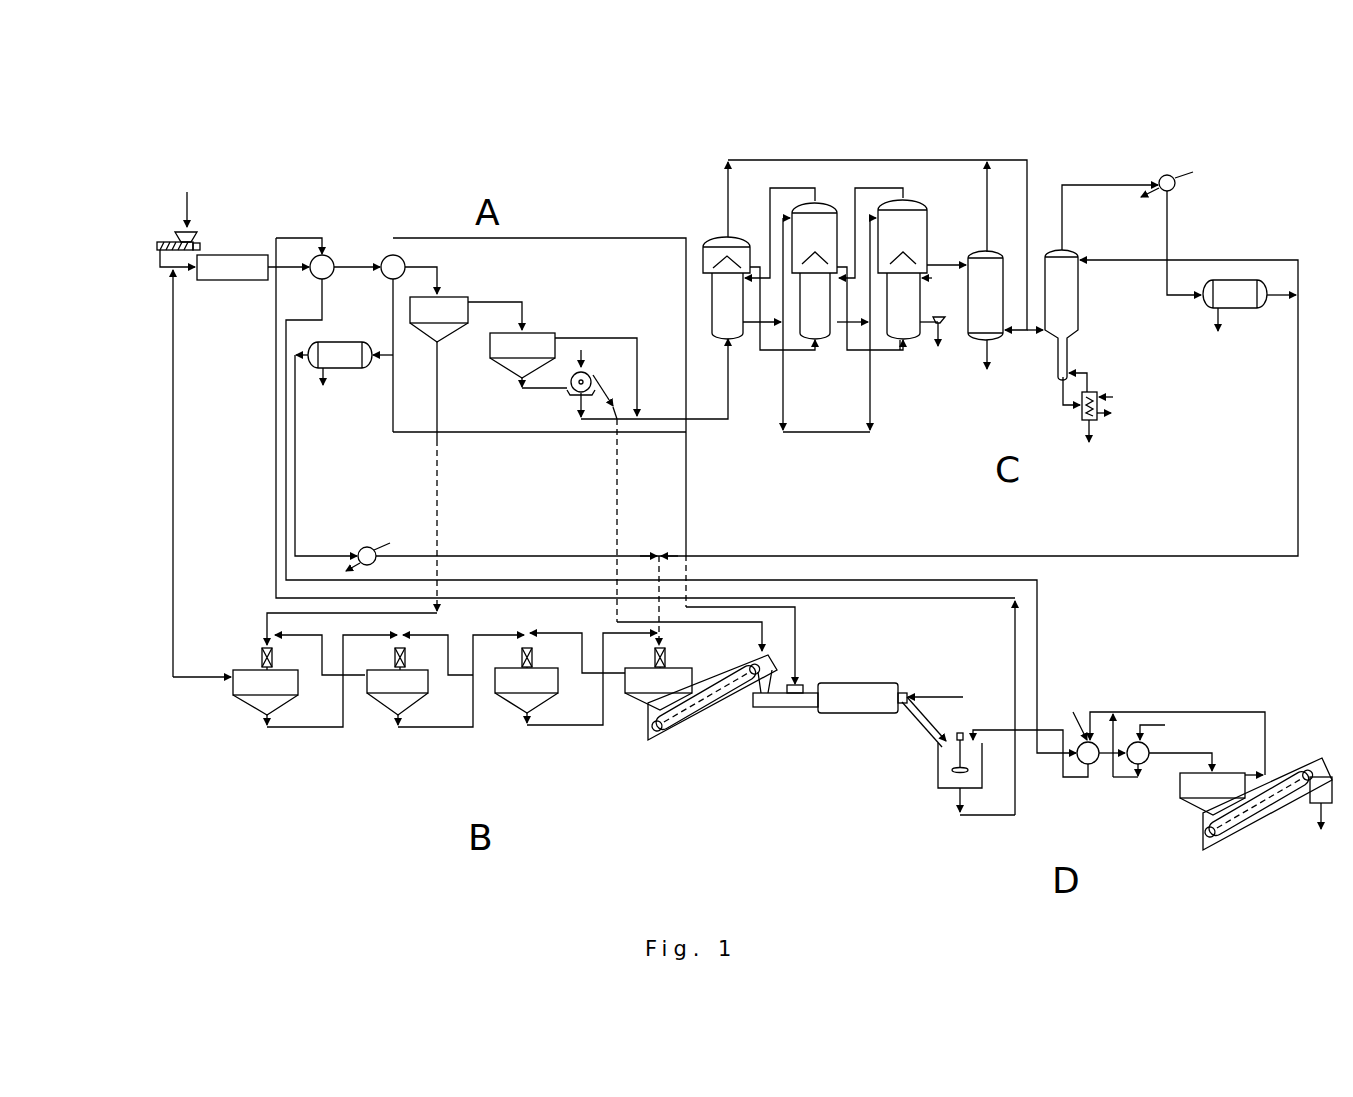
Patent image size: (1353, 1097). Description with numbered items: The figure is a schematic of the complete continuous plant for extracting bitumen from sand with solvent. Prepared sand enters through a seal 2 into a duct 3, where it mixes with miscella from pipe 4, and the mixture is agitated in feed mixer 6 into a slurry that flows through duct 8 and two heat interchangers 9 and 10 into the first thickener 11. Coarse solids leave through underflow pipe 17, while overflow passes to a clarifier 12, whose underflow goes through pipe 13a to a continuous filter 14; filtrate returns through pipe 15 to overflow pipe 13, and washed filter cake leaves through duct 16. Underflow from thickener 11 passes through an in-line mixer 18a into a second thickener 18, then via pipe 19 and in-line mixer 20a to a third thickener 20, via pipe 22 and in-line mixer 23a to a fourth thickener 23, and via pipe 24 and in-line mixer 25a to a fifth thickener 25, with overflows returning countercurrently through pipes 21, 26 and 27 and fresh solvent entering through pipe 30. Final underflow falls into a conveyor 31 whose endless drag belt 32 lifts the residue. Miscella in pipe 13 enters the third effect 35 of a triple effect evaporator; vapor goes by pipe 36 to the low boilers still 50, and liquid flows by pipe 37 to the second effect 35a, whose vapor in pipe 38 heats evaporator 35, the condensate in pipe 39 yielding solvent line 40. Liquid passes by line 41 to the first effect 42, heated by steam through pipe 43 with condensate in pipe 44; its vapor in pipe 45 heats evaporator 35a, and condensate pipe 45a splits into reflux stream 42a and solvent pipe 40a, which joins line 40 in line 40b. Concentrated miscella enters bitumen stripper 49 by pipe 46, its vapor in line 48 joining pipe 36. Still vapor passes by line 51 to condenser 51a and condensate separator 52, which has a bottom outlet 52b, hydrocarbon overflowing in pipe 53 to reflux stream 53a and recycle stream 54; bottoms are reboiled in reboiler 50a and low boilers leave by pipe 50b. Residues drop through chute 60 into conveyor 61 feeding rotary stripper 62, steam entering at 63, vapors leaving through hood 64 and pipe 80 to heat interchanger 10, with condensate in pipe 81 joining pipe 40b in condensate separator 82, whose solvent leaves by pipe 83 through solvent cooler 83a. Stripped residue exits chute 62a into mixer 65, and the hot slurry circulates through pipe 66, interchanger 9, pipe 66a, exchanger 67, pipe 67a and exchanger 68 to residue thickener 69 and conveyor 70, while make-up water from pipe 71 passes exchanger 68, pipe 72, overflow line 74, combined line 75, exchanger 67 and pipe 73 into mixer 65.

The seal 2 is at (163, 242).
The duct 3 is at (183, 265).
The pipe 4 is at (173, 467).
The feed mixer 6 is at (243, 255).
The duct 8 is at (286, 270).
The heat interchanger 9 is at (326, 256).
The heat interchanger 10 is at (389, 257).
The thickener 11 is at (455, 300).
The clarifier 12 is at (540, 332).
The overflow pipe 13 is at (658, 418).
The pipe 13a is at (537, 392).
The continuous filter 14 is at (592, 380).
The pipe 15 is at (593, 421).
The duct 16 is at (617, 483).
The underflow pipe 17 is at (437, 403).
The second thickener 18 is at (233, 687).
The in-line mixer 18a is at (262, 653).
The pipe 19 is at (313, 728).
The third thickener 20 is at (383, 683).
The in-line mixer 20a is at (395, 657).
The pipe 21 is at (322, 650).
The pipe 22 is at (435, 728).
The fourth thickener 23 is at (515, 682).
The in-line mixer 23a is at (522, 655).
The pipe 24 is at (562, 726).
The fifth thickener 25 is at (638, 680).
The in-line mixer 25a is at (655, 655).
The pipe 26 is at (448, 647).
The pipe 27 is at (582, 648).
The pipe 30 is at (663, 635).
The conveyor 31 is at (678, 732).
The endless drag belt 32 is at (715, 685).
The third effect evaporator 35 is at (708, 237).
The second effect evaporator 35a is at (818, 202).
The pipe 36 is at (855, 160).
The pipe 37 is at (797, 351).
The pipe 38 is at (770, 208).
The pipe 39 is at (750, 322).
The line 40 is at (783, 410).
The pipe 40a is at (870, 402).
The line 40b is at (762, 433).
The line 41 is at (885, 352).
The first effect evaporator 42 is at (920, 203).
The stream 42a is at (900, 352).
The pipe 43 is at (932, 279).
The pipe 44 is at (923, 323).
The pipe 45 is at (872, 188).
The pipe 45a is at (838, 322).
The pipe 46 is at (935, 262).
The line 48 is at (990, 215).
The bitumen stripper 49 is at (995, 343).
The low boilers still 50 is at (1078, 303).
The reboiler 50a is at (1095, 390).
The pipe 50b is at (1090, 428).
The line 51 is at (1063, 218).
The condenser 51a is at (1173, 175).
The condensate separator 52 is at (1240, 308).
The line 52b is at (1217, 313).
The pipe 53 is at (1273, 297).
The stream 53a is at (1257, 260).
The stream 54 is at (675, 553).
The chute 60 is at (742, 702).
The conveyor 61 is at (780, 707).
The stripper 62 is at (850, 683).
The chute 62a is at (918, 720).
The steam inlet 63 is at (942, 697).
The hood 64 is at (803, 685).
The mixer 65 is at (938, 768).
The pipe 66 is at (275, 499).
The pipe 66a is at (284, 440).
The residue-water heat exchanger 67 is at (1073, 712).
The pipe 67a is at (1122, 748).
The heat exchanger 68 is at (1150, 747).
The residue thickener 69 is at (1200, 788).
The conveyor 70 is at (1258, 817).
The pipe 71 is at (1167, 725).
The pipe 72 is at (1128, 778).
The pipe 73 is at (1048, 727).
The line 74 is at (1235, 712).
The line 75 is at (1115, 710).
The pipe 80 is at (593, 238).
The pipe 81 is at (393, 315).
The condensate separator 82 is at (340, 368).
The pipe 83 is at (295, 477).
The solvent cooler 83a is at (372, 552).